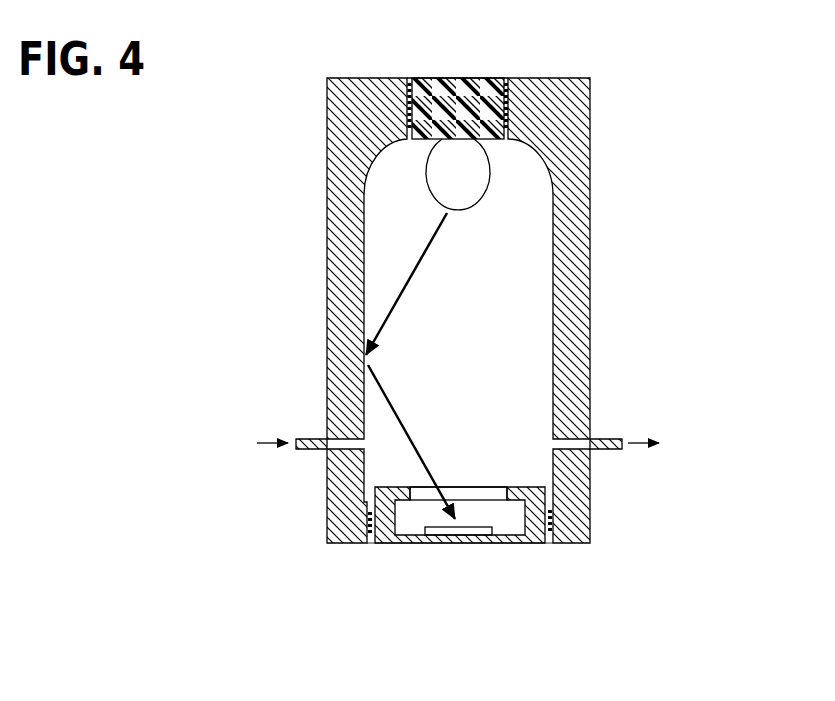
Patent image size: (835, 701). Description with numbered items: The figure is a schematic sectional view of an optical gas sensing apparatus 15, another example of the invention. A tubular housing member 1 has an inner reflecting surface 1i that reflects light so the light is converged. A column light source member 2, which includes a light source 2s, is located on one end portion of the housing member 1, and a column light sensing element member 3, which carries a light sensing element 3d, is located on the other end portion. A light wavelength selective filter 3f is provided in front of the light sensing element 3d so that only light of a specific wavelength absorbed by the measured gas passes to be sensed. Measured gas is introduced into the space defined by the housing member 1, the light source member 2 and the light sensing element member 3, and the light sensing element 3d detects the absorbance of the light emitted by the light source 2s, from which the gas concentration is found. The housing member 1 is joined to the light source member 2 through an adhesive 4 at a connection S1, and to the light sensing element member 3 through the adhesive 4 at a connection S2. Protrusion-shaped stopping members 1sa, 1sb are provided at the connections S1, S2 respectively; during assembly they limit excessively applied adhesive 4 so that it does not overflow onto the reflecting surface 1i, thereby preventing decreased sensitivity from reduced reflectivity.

The optical gas sensing apparatus 15 is at (463, 311).
The housing member 1 is at (475, 310).
The reflecting surface 1i is at (555, 278).
The stopping member 1sa is at (525, 132).
The stopping member 1sb is at (548, 502).
The light source member 2 is at (462, 97).
The light source 2s is at (458, 163).
The adhesive 4 is at (508, 93).
The light sensing element member 3 is at (505, 544).
The light wavelength selective filter 3f is at (423, 495).
The light sensing element 3d is at (458, 536).
The connection S1 is at (507, 76).
The connection S2 is at (553, 550).